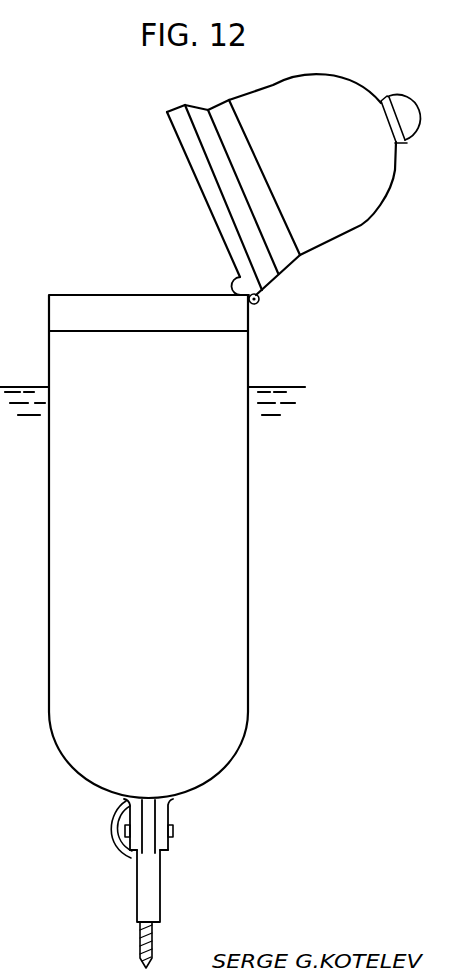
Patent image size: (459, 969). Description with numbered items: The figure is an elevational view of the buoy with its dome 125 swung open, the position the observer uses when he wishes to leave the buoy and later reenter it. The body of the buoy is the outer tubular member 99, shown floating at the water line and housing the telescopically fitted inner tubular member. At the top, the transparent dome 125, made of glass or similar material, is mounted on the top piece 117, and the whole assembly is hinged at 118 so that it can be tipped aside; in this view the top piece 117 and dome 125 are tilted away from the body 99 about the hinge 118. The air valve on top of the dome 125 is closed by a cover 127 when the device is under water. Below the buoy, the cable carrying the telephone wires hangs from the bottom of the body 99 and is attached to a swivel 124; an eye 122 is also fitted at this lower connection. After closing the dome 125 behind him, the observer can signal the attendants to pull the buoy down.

The outer tubular member 99 is at (248, 700).
The top piece 117 is at (167, 112).
The hinge 118 is at (260, 300).
The dome 125 is at (273, 85).
The swivel 124 is at (173, 831).
The eye ring 122 is at (123, 852).
The cover 127 is at (155, 946).